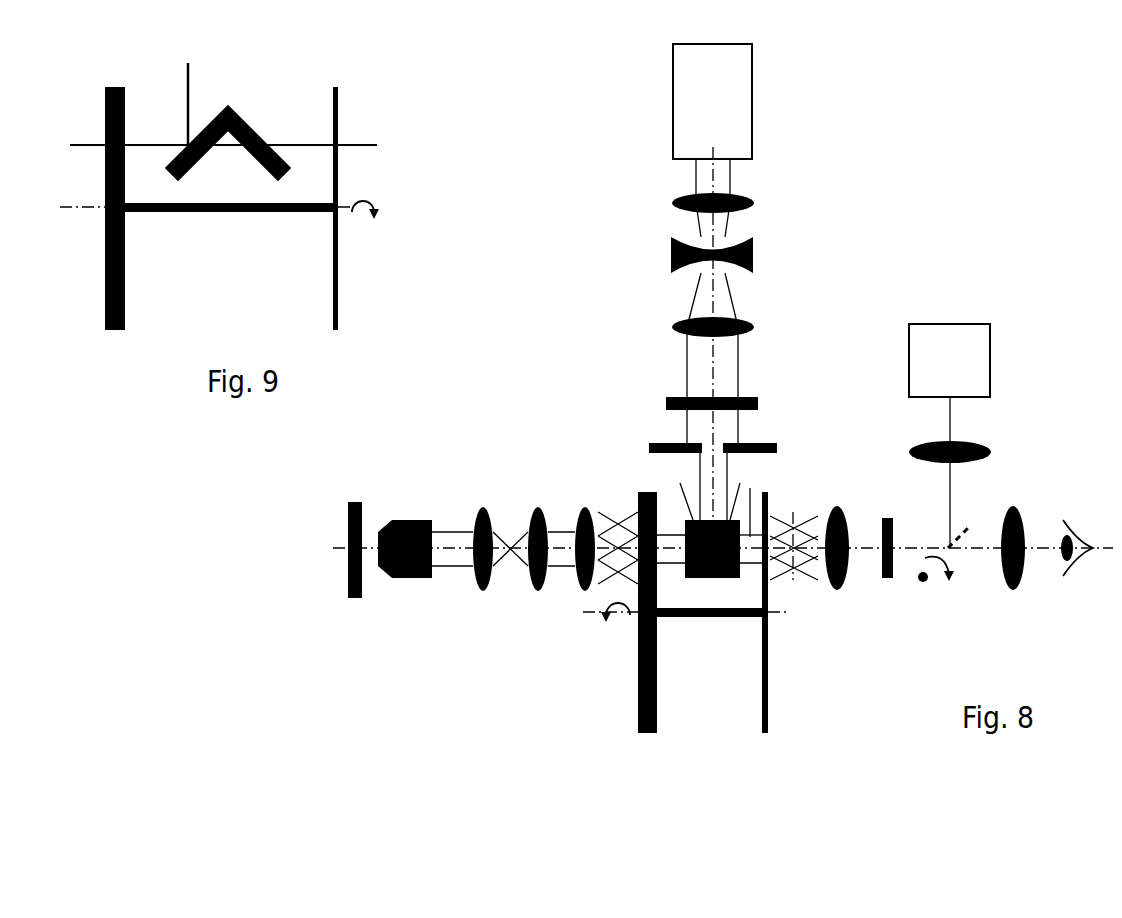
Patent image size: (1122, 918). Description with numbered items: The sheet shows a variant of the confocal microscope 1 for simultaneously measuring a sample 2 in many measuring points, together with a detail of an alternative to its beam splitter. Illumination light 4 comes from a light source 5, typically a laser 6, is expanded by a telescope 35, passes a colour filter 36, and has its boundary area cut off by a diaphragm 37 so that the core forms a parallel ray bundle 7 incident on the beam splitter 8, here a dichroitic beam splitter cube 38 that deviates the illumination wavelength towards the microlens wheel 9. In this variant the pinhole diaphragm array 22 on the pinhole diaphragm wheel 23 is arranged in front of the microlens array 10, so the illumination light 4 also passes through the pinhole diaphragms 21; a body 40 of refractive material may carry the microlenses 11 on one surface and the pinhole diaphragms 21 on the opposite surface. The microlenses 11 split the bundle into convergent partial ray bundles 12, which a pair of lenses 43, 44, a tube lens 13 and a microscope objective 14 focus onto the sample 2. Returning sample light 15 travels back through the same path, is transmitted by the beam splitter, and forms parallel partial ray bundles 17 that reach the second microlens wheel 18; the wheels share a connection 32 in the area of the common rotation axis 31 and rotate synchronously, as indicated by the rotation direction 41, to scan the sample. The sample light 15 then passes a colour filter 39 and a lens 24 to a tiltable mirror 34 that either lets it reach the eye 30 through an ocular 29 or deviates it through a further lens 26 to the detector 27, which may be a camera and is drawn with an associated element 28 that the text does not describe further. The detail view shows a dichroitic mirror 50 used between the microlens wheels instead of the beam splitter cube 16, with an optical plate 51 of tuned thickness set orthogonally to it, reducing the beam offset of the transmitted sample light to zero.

In FIG. 8, the confocal microscope 1 is at (865, 162).
In FIG. 8, the sample 2 is at (350, 598).
In FIG. 9, the illumination light 4 is at (187, 93).
In FIG. 8, the illumination light 4 is at (703, 463).
In FIG. 8, the light source 5 is at (752, 100).
In FIG. 8, the laser 6 is at (700, 92).
In FIG. 8, the parallel ray bundle 7 is at (727, 469).
In FIG. 8, the beam splitter 8 is at (680, 483).
In FIG. 9, the microlens wheel 9 is at (125, 328).
In FIG. 8, the microlens wheel 9 is at (658, 727).
In FIG. 9, the microlens array 10 is at (133, 283).
In FIG. 8, the microlens array 10 is at (664, 697).
In FIG. 9, the microlenses 11 is at (125, 237).
In FIG. 8, the microlenses 11 is at (658, 653).
In FIG. 8, the partial ray bundles 12 is at (603, 585).
In FIG. 8, the tube lens 13 is at (480, 587).
In FIG. 8, the microscope objective 14 is at (397, 578).
In FIG. 9, the sample light 15 is at (290, 140).
In FIG. 8, the sample light 15 is at (750, 488).
In FIG. 8, the beam splitter cube 16 is at (728, 578).
In FIG. 8, the parallel partial ray bundles 17 is at (788, 509).
In FIG. 9, the second microlens wheel 18 is at (334, 328).
In FIG. 8, the second microlens wheel 18 is at (762, 727).
In FIG. 9, the pinhole diaphragms 21 is at (105, 252).
In FIG. 8, the pinhole diaphragms 21 is at (640, 655).
In FIG. 9, the pinhole diaphragm array 22 is at (98, 267).
In FIG. 8, the pinhole diaphragm array 22 is at (634, 692).
In FIG. 9, the pinhole diaphragm wheel 23 is at (105, 323).
In FIG. 8, the pinhole diaphragm wheel 23 is at (638, 717).
In FIG. 8, the lens 24 is at (843, 510).
In FIG. 8, the further lens 26 is at (988, 448).
In FIG. 8, the detector 27 is at (993, 353).
In FIG. 8, the image sensor 28 is at (909, 353).
In FIG. 8, the ocular 29 is at (1020, 578).
In FIG. 8, the eye 30 is at (1068, 570).
In FIG. 8, the rotation axis 31 is at (583, 613).
In FIG. 9, the connection 32 is at (227, 215).
In FIG. 8, the connection 32 is at (717, 617).
In FIG. 8, the mirror 34 is at (932, 567).
In FIG. 8, the telescope 35 is at (771, 198).
In FIG. 8, the colour filter 36 is at (758, 398).
In FIG. 8, the diaphragm 37 is at (758, 442).
In FIG. 8, the dichroitic beam splitter cube 38 is at (740, 483).
In FIG. 8, the colour filter 39 is at (893, 577).
In FIG. 9, the body 40 is at (105, 118).
In FIG. 8, the body 40 is at (658, 672).
In FIG. 9, the rotation direction 41 is at (375, 197).
In FIG. 8, the lens 43 is at (532, 585).
In FIG. 8, the lens 44 is at (583, 585).
In FIG. 9, the dichroitic mirror 50 is at (203, 127).
In FIG. 9, the optical plate 51 is at (243, 118).